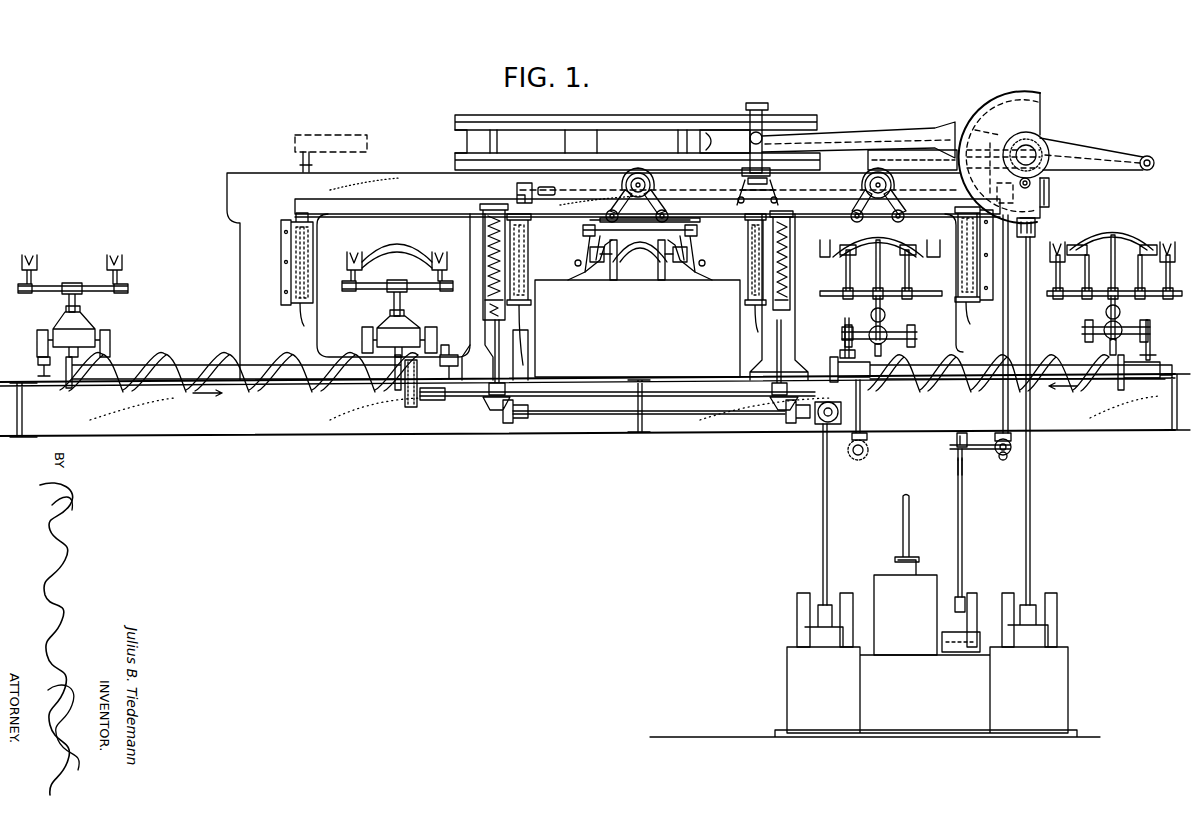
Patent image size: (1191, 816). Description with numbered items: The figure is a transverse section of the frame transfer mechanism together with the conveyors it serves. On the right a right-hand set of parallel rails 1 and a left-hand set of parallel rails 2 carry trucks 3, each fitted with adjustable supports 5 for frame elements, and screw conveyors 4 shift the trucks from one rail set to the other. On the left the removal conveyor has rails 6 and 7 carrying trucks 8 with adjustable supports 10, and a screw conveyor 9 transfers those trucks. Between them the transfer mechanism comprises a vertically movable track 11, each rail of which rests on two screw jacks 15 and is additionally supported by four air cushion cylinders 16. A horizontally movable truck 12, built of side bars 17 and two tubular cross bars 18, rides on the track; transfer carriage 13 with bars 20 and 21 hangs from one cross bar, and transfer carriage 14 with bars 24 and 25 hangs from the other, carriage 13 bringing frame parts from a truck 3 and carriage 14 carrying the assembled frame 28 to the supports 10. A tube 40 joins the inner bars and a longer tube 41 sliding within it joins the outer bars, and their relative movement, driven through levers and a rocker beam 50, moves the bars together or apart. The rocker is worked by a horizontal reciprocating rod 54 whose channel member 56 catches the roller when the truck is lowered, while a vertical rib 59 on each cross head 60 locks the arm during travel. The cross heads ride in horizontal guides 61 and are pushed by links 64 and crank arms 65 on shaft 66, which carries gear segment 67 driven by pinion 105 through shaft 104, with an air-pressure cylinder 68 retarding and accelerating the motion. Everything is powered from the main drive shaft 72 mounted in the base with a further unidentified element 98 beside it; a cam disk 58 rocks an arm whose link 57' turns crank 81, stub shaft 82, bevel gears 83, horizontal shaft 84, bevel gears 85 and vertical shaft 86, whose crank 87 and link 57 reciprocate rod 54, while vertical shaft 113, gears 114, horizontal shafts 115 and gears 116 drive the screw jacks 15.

The right-hand set of parallel rails 1 is at (1151, 347).
The left-hand set of parallel rails 2 is at (842, 347).
The truck 3 is at (886, 328).
The screw conveyor 4 is at (953, 362).
The adjustable support 5 is at (858, 270).
The set of rails 6 is at (38, 361).
The set of rails 7 is at (446, 356).
The truck 8 is at (90, 326).
The screw conveyor 9 is at (185, 362).
The adjustable support 10 is at (76, 300).
The vertically movable track 11 is at (435, 199).
The horizontally movable truck 12 is at (673, 178).
The transfer carriage 13 is at (900, 249).
The transfer carriage 14 is at (704, 239).
The screw jack 15 is at (492, 332).
The air cushion cylinder 16 is at (313, 252).
The side bar 17 is at (702, 200).
The tubular cross bar 18 is at (636, 172).
The carriage bar 20 is at (905, 216).
The carriage bar 21 is at (845, 212).
The carriage bar 24 is at (665, 244).
The carriage bar 25 is at (606, 214).
The assembled frame 28 is at (418, 252).
The tube 40 is at (720, 222).
The longer tube 41 is at (665, 208).
The rocker beam 50 is at (780, 192).
The horizontal reciprocating rod 54 is at (565, 186).
The upright channel member 56 is at (517, 188).
The link 57 is at (1003, 161).
The link 57' is at (977, 527).
The cam disk 58 is at (975, 592).
The vertical rib 59 is at (762, 118).
The cross head 60 is at (730, 133).
The horizontal guide 61 is at (650, 124).
The link 64 is at (848, 137).
The crank arm 65 is at (1088, 144).
The shaft 66 is at (1036, 140).
The gear segment 67 is at (990, 103).
The air-pressure cylinder 68 is at (868, 160).
The main drive shaft 72 is at (909, 512).
The crank 81 is at (955, 441).
The horizontal stub shaft 82 is at (964, 452).
The bevel gears 83 is at (1000, 438).
The horizontal shaft 84 is at (965, 478).
The bevel gears 85 is at (1006, 453).
The vertical shaft 86 is at (1003, 332).
The crank 87 is at (1050, 192).
The cylinder 98 is at (1015, 592).
The shaft 104 is at (1031, 512).
The pinion 105 is at (1037, 222).
The vertical shaft 113 is at (823, 505).
The gears 114 is at (817, 424).
The horizontal shaft 115 is at (712, 414).
The gears 116 is at (508, 424).